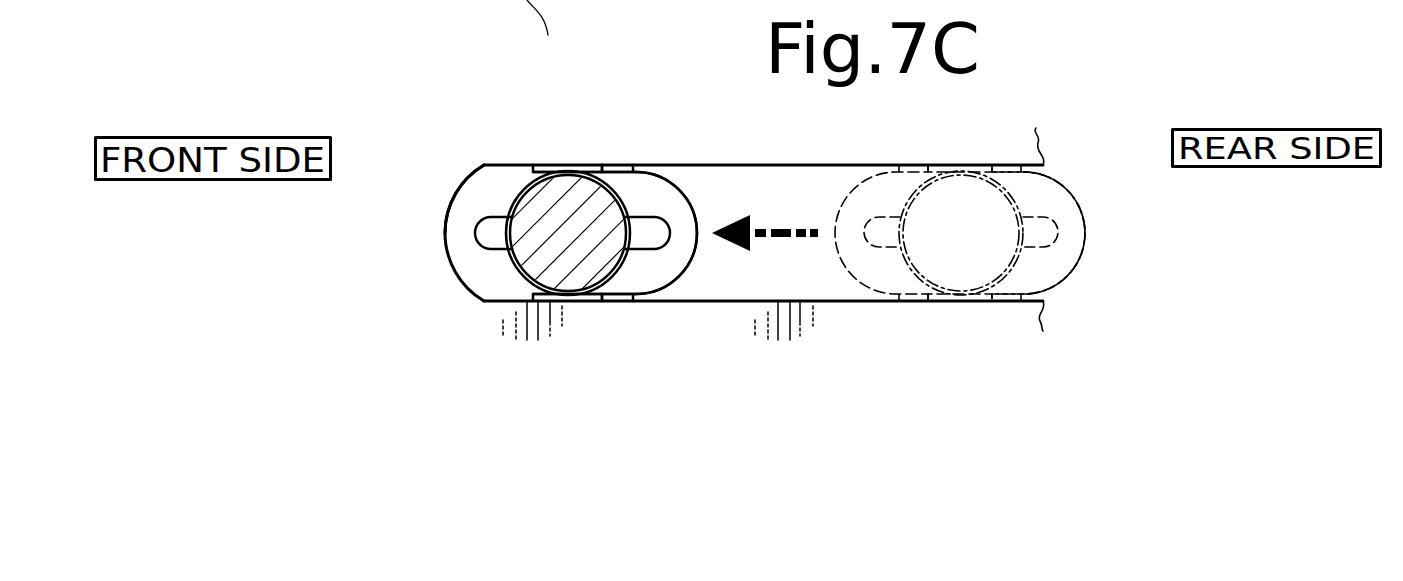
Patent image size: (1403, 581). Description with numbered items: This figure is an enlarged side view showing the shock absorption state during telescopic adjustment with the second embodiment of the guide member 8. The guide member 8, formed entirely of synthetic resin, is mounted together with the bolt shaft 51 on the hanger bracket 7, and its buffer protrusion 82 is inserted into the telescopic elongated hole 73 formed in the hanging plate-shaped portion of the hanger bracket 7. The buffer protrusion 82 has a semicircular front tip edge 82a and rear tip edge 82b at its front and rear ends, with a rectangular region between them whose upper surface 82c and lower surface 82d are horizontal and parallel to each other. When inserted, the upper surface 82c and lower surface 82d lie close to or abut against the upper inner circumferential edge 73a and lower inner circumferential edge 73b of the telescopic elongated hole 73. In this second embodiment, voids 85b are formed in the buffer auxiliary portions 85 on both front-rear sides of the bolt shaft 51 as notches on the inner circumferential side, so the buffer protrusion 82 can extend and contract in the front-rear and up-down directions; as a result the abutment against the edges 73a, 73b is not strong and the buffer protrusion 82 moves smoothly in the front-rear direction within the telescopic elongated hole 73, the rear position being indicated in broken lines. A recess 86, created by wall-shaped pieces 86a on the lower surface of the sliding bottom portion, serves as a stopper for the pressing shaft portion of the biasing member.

The hanger bracket 7 is at (1046, 141).
The guide member 8 is at (480, 196).
The bolt shaft 51 is at (568, 212).
The telescopic elongated hole 73 is at (722, 188).
The upper inner circumferential edge 73a is at (1027, 166).
The lower inner circumferential edge 73b is at (1027, 296).
The buffer protrusion 82 is at (500, 197).
The front tip edge 82a is at (453, 260).
The rear tip edge 82b is at (698, 212).
The upper surface 82c is at (633, 172).
The lower surface 82d is at (630, 302).
The buffer auxiliary portion 85 is at (688, 253).
The void 85b is at (495, 231).
The recess 86 is at (609, 14).
The wall-shaped piece 86a is at (548, 37).